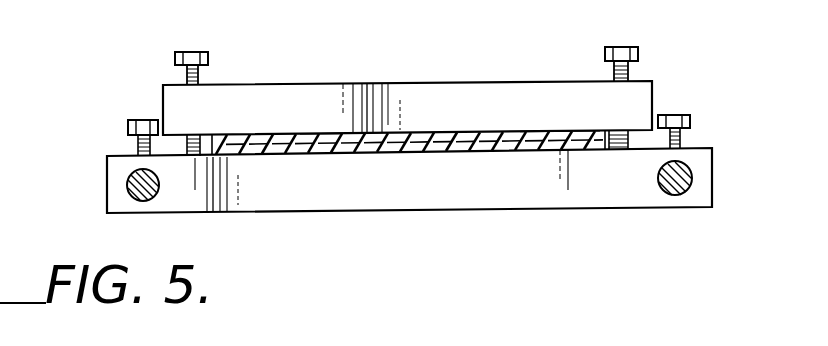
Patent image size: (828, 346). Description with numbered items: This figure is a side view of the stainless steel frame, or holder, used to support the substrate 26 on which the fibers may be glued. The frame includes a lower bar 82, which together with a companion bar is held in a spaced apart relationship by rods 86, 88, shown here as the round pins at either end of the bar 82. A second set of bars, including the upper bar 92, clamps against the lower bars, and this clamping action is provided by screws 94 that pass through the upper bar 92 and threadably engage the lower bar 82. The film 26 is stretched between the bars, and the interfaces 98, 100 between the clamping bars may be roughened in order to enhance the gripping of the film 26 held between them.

The bar 82 is at (480, 198).
The bar 92 is at (414, 84).
The screws 94 is at (197, 50).
The interface 98 is at (370, 153).
The interface 100 is at (327, 136).
The substrate 26 is at (530, 132).
The rod 86 is at (128, 186).
The rod 88 is at (693, 177).